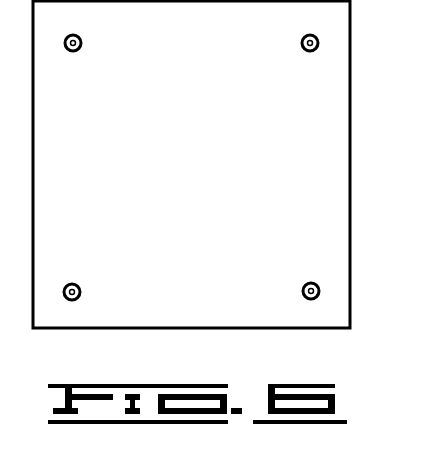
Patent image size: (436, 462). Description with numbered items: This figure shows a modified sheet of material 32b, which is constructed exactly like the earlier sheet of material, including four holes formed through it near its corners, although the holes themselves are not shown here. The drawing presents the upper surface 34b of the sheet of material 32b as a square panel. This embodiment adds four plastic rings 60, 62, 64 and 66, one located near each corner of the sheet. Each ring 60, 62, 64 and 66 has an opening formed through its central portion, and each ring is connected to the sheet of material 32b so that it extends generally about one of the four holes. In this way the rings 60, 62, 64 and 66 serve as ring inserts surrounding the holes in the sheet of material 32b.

The sheet of material 32b is at (306, 139).
The upper surface 34b is at (318, 183).
The plastic ring 60 is at (76, 283).
The plastic ring 62 is at (74, 52).
The plastic ring 64 is at (305, 53).
The plastic ring 66 is at (307, 283).